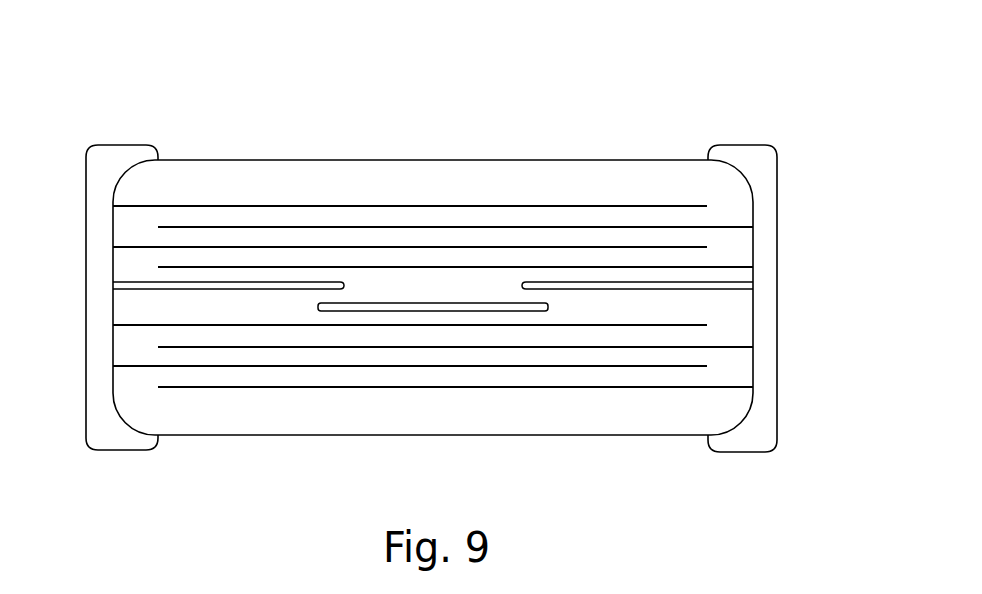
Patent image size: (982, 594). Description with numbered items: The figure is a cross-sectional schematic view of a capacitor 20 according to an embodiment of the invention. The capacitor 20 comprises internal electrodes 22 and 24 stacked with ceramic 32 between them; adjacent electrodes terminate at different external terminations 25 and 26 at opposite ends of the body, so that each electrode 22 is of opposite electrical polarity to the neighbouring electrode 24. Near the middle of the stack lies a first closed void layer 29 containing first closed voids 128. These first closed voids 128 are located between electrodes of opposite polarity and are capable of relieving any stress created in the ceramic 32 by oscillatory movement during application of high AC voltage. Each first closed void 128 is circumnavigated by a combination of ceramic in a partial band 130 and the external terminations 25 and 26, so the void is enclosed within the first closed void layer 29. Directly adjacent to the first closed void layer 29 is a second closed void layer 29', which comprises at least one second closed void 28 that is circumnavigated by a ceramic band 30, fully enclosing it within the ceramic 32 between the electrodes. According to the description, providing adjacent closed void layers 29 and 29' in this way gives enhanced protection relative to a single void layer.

The capacitor 20 is at (775, 460).
The internal electrode 22 is at (263, 247).
The internal electrode 24 is at (665, 267).
The external termination 25 is at (98, 158).
The external termination 26 is at (735, 155).
The second closed void 28 is at (455, 308).
The first closed void layer 29 is at (55, 261).
The second closed void layer 29' is at (55, 325).
The ceramic band 30 is at (303, 310).
The ceramic 32 is at (702, 310).
The first closed void 128 is at (565, 283).
The ceramic in a partial band 130 is at (278, 272).